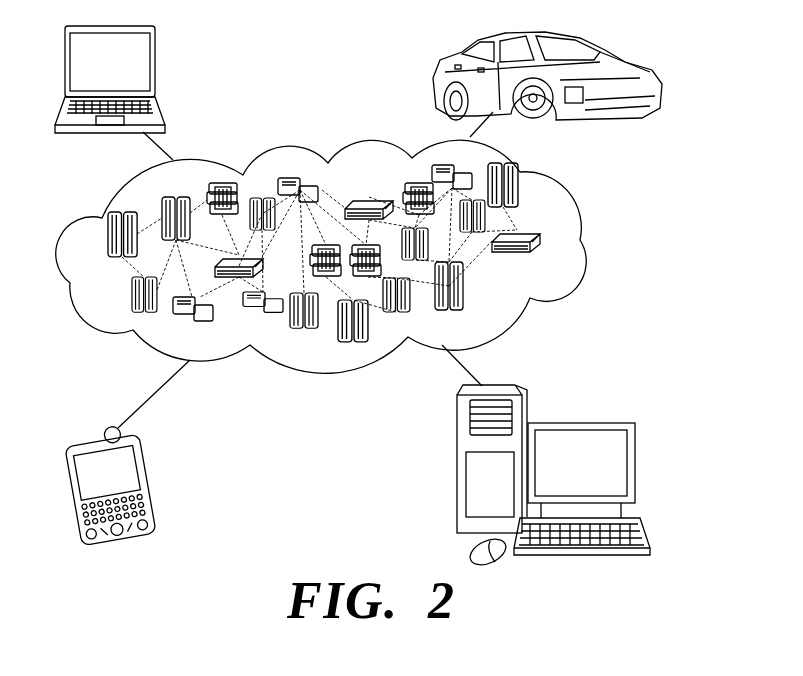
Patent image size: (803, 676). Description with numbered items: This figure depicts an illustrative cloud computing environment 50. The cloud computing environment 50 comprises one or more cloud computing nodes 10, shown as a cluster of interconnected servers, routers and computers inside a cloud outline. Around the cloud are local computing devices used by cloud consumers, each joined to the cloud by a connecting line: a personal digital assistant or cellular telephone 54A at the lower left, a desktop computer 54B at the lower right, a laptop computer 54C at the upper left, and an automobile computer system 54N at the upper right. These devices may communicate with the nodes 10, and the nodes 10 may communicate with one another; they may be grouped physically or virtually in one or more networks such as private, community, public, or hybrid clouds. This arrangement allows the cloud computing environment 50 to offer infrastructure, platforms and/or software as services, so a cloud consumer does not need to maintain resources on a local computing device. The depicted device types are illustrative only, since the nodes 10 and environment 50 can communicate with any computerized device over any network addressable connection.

The cloud computing node 10 is at (543, 257).
The cloud computing environment 50 is at (581, 241).
The personal digital assistant (PDA) or cellular telephone 54A is at (148, 486).
The desktop computer 54B is at (580, 421).
The laptop computer 54C is at (155, 68).
The automobile computer system 54N is at (440, 78).